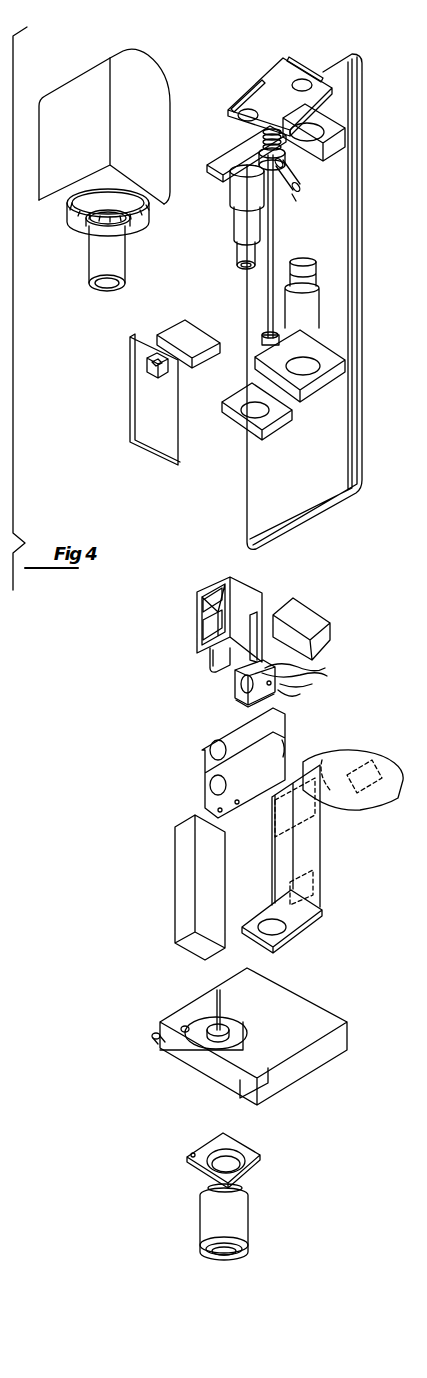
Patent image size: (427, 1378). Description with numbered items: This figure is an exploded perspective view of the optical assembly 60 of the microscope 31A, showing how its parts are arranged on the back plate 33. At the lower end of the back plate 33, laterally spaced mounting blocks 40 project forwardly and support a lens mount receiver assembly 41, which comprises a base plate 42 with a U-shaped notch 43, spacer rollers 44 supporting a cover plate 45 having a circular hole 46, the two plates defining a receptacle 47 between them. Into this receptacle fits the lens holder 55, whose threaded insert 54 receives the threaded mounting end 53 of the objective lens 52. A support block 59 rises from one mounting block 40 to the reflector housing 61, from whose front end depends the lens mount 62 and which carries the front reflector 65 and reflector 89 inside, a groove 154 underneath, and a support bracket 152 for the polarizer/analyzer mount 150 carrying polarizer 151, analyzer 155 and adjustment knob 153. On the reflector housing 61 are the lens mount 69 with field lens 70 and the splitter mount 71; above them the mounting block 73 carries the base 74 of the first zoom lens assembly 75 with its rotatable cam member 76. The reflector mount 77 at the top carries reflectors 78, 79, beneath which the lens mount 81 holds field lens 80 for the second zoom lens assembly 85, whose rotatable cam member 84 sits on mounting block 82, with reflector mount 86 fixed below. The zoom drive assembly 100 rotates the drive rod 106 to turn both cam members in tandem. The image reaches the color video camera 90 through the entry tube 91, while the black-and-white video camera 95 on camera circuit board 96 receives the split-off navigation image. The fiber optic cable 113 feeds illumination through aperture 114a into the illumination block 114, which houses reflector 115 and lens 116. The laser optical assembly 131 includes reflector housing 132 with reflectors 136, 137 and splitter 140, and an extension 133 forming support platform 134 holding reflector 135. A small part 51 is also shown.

The microscope 31A is at (213, 31).
The color video camera 90 is at (67, 88).
The entry tube 91 is at (90, 265).
The back plate 33 is at (342, 195).
The reflector mount 77 is at (266, 72).
The reflector 78 is at (235, 100).
The reflector 79 is at (302, 60).
The lens mount 81 is at (328, 117).
The field lens 80 is at (315, 138).
The mounting block 73 is at (224, 153).
The base 74 is at (232, 175).
The rotatable cam member 76 is at (236, 208).
The first zoom lens assembly 75 is at (222, 241).
The drive rod 106 is at (268, 280).
The zoom drive assembly 100 is at (299, 197).
The second zoom lens assembly 85 is at (333, 300).
The rotatable cam member 84 is at (317, 326).
The mounting block 82 is at (310, 368).
The lens mount 69 is at (265, 430).
The field lens 70 is at (242, 416).
The splitter mount 71 is at (193, 332).
The camera circuit board 96 is at (132, 415).
The black-and-white video camera 95 is at (150, 377).
The optical assembly 60 is at (205, 503).
The reflector housing 61 is at (238, 588).
The groove 154 is at (250, 615).
The reflector 89 is at (210, 610).
The front reflector 65 is at (210, 632).
The lens mount 62 is at (222, 665).
The lens 116 is at (237, 681).
The reflector 115 is at (245, 708).
The reflector mount 86 is at (312, 613).
The fiber optic cable 113 is at (327, 661).
The aperture 114a is at (314, 684).
The illumination block 114 is at (288, 694).
The polarizer/analyzer mount 150 is at (187, 762).
The support bracket 152 is at (250, 803).
The analyzer 155 is at (210, 745).
The polarizer 151 is at (213, 789).
The adjustment knob 153 is at (287, 747).
The support block 59 is at (173, 887).
The laser optical assembly 131 is at (336, 913).
The reflector housing 132 is at (280, 853).
The splitter 140 is at (253, 912).
The reflector 136 is at (312, 838).
The reflector 137 is at (312, 885).
The extension 133 is at (333, 815).
The support platform 134 is at (365, 732).
The reflector 135 is at (383, 741).
The mounting block 40 is at (273, 1087).
The lens mount receiver assembly 41 is at (172, 1092).
The base plate 42 is at (207, 1068).
The U-shaped notch 43 is at (240, 1038).
The cover plate 45 is at (210, 1017).
The receptacle 47 is at (205, 1041).
The circular hole 46 is at (217, 999).
The spacer roller 44 is at (185, 1026).
The pin 51 is at (153, 1038).
The lens holder 55 is at (258, 1173).
The threaded insert 54 is at (232, 1147).
The threaded mounting end 53 is at (243, 1189).
The objective lens 52 is at (243, 1228).